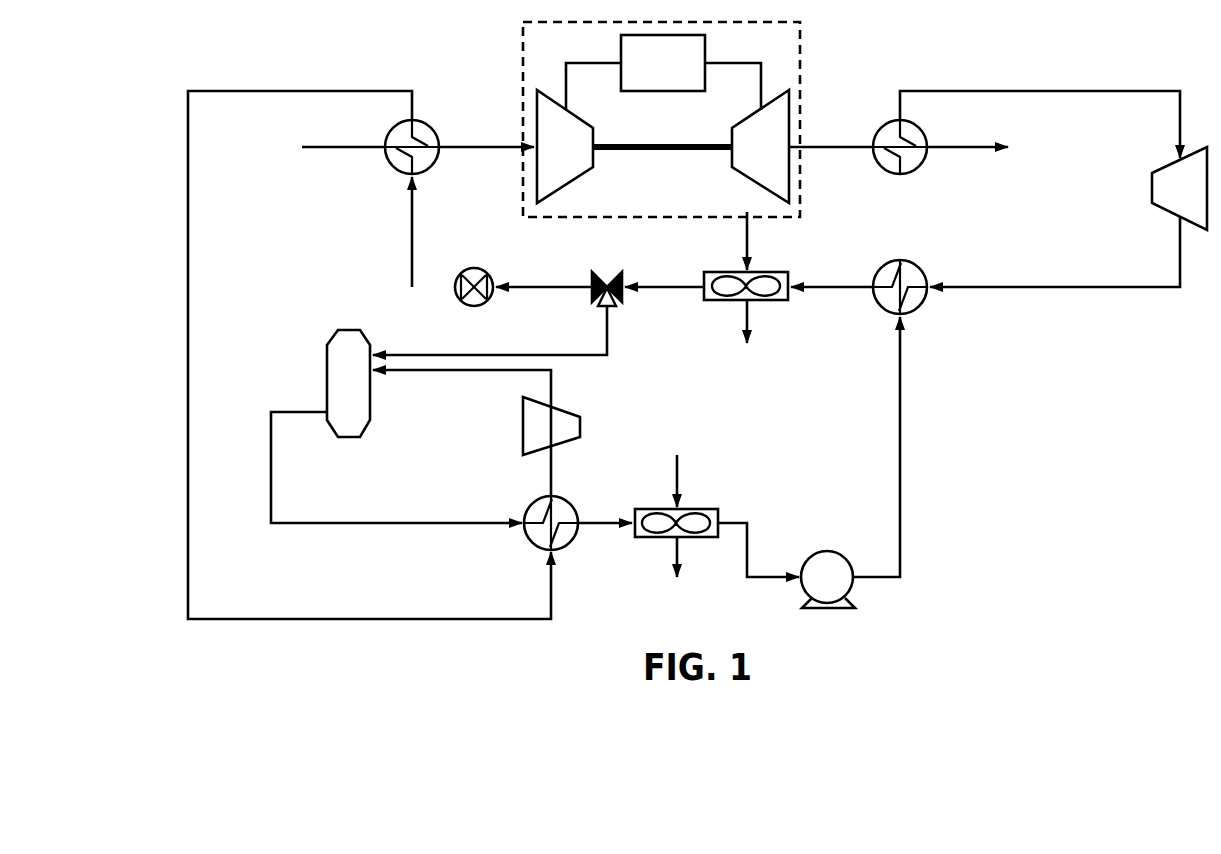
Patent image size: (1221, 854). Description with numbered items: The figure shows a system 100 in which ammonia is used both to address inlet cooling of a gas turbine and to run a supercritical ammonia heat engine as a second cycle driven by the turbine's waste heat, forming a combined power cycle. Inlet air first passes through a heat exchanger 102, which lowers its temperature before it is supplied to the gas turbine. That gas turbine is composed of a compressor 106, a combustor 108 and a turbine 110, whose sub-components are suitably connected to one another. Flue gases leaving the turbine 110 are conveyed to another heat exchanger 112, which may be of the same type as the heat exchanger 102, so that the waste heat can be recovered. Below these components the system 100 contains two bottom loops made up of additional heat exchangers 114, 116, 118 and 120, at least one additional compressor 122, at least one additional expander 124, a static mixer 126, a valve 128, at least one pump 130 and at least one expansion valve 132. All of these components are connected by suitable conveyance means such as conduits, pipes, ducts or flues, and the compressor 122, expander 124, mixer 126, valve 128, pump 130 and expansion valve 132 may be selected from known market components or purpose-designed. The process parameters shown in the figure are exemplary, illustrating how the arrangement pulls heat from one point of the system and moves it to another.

The system 100 is at (322, 60).
The heat exchanger 102 is at (400, 138).
The compressor 106 is at (579, 133).
The combustor 108 is at (663, 63).
The turbine 110 is at (691, 133).
The heat exchanger 112 is at (913, 137).
The heat exchanger 114 is at (565, 513).
The heat exchanger 116 is at (682, 510).
The heat exchanger 118 is at (913, 278).
The heat exchanger 120 is at (751, 273).
The additional compressor 122 is at (551, 426).
The additional expander 124 is at (1179, 188).
The static mixer 126 is at (348, 383).
The valve 128 is at (583, 284).
The pump 130 is at (841, 570).
The expansion valve 132 is at (456, 278).